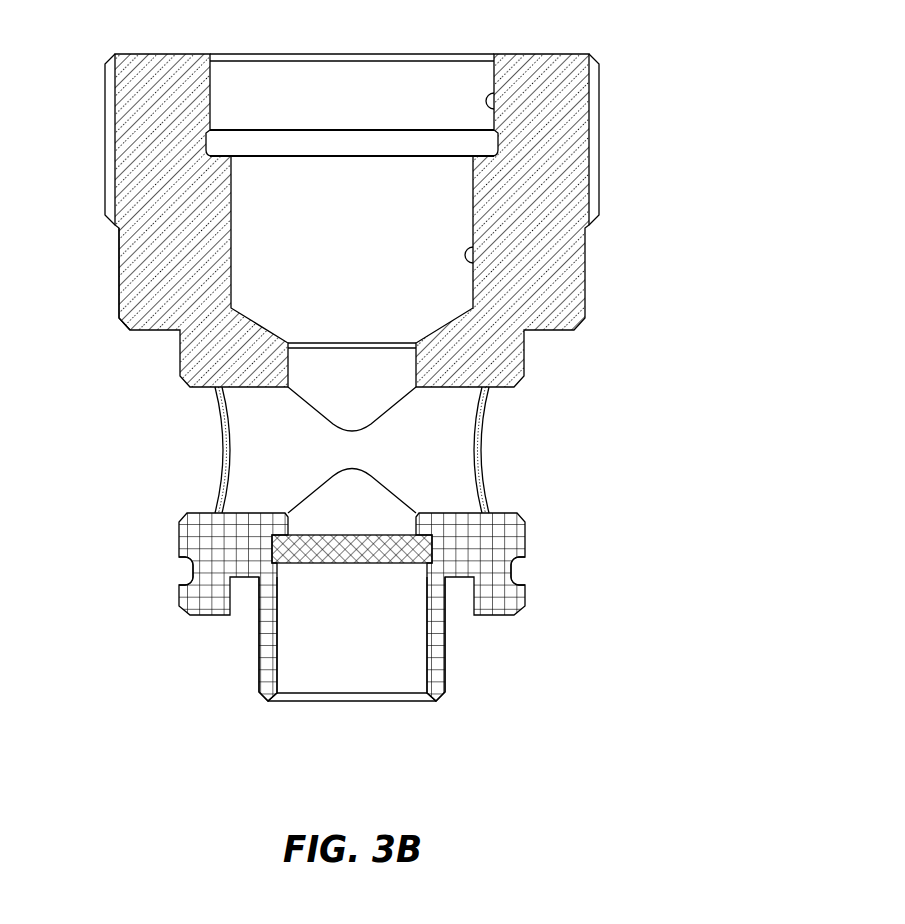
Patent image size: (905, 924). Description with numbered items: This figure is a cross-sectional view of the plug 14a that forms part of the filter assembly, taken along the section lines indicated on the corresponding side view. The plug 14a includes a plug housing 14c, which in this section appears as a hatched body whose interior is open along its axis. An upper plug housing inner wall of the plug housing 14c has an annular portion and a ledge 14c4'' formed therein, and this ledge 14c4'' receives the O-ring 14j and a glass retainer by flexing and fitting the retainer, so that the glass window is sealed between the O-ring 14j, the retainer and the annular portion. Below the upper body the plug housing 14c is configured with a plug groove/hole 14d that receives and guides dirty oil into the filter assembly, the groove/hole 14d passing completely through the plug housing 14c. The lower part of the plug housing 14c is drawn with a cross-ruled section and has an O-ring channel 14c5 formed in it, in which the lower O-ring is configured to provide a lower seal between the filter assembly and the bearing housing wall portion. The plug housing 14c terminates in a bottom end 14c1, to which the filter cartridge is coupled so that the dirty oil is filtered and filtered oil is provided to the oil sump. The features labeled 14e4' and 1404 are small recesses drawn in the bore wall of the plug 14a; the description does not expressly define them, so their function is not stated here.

The plug 14a is at (601, 72).
The O-ring 14j is at (589, 163).
The ledge 14c4'' is at (87, 279).
The upper notch in bore wall 14e4' is at (598, 110).
The lower notch in bore wall 1404 is at (476, 263).
The plug groove/hole 14d is at (498, 447).
The plug housing 14c is at (526, 523).
The O-ring channel 14c5 is at (514, 577).
The bottom end of the plug housing 14c1 is at (446, 660).